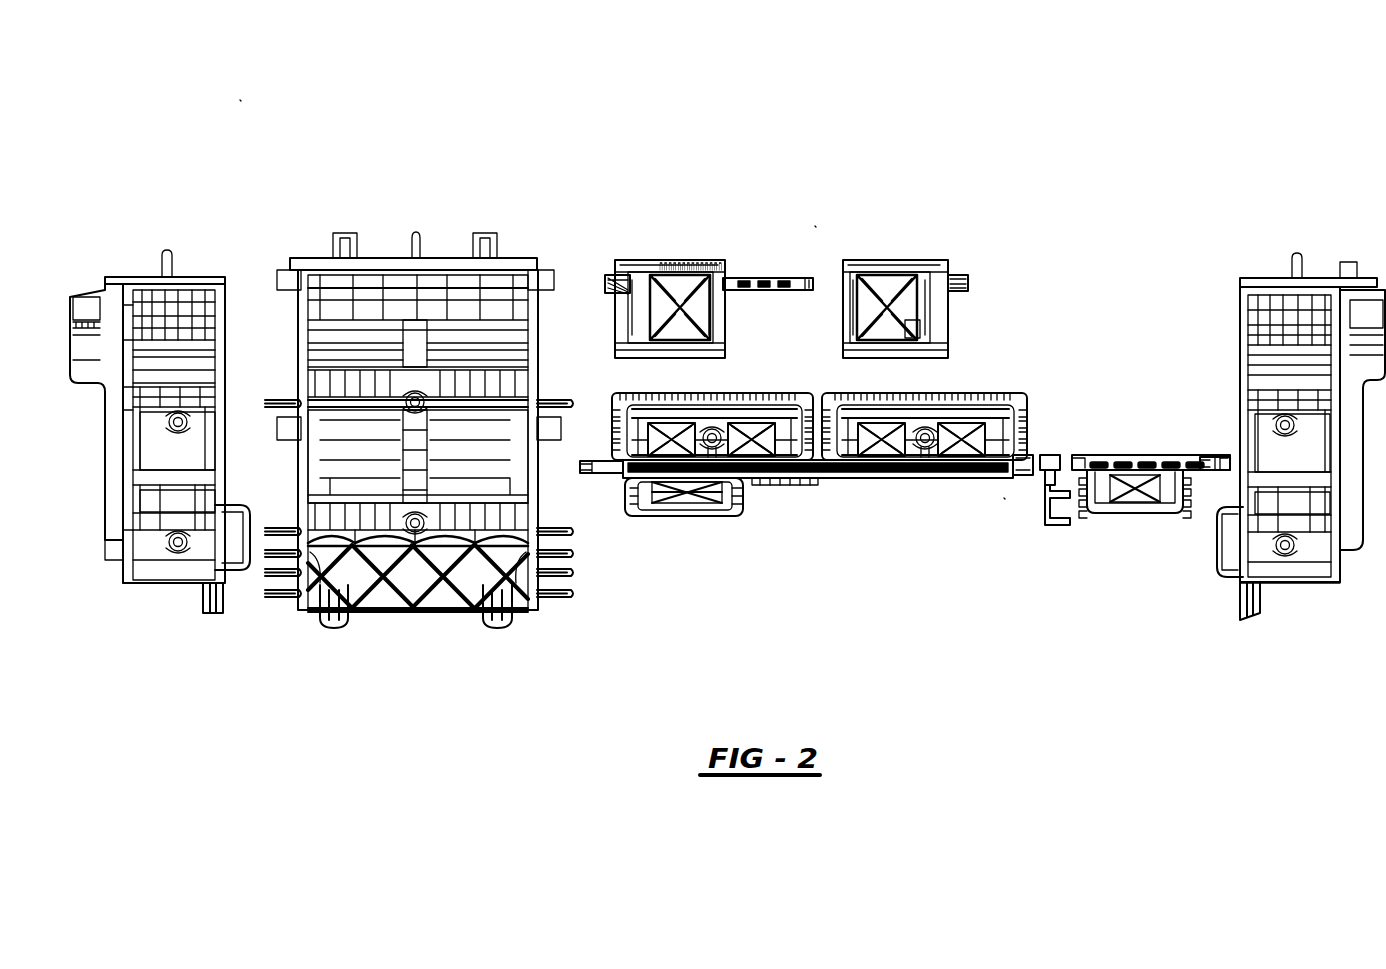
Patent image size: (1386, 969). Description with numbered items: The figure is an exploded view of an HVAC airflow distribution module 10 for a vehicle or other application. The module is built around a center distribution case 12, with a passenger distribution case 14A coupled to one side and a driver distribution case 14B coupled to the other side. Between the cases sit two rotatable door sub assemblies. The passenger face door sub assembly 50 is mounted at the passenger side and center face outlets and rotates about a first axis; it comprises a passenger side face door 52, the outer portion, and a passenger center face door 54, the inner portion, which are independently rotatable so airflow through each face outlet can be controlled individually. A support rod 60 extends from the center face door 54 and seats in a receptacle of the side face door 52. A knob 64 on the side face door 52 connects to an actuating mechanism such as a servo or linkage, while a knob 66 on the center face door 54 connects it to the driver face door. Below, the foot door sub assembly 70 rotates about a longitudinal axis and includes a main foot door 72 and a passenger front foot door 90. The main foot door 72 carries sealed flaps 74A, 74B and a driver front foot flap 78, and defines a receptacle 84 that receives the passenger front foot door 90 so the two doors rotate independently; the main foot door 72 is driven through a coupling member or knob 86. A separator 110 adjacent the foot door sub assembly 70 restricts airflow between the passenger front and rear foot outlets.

The HVAC airflow distribution module 10 is at (241, 99).
The center distribution case 12 is at (388, 252).
The passenger distribution case 14A is at (1268, 278).
The driver distribution case 14B is at (118, 300).
The passenger face door sub assembly 50 is at (815, 227).
The passenger side face door 52 is at (908, 262).
The passenger center face door 54 is at (665, 260).
The support rod 60 is at (763, 278).
The knob 64 is at (950, 280).
The knob 66 is at (610, 283).
The foot door sub assembly 70 is at (1004, 498).
The main foot door 72 is at (826, 482).
The flap 74A is at (958, 420).
The flap 74B is at (749, 420).
The driver front foot flap 78 is at (690, 492).
The receptacle 84 is at (940, 478).
The coupling member/knob 86 is at (598, 472).
The passenger front foot door 90 is at (1139, 512).
The separator 110 is at (1047, 460).